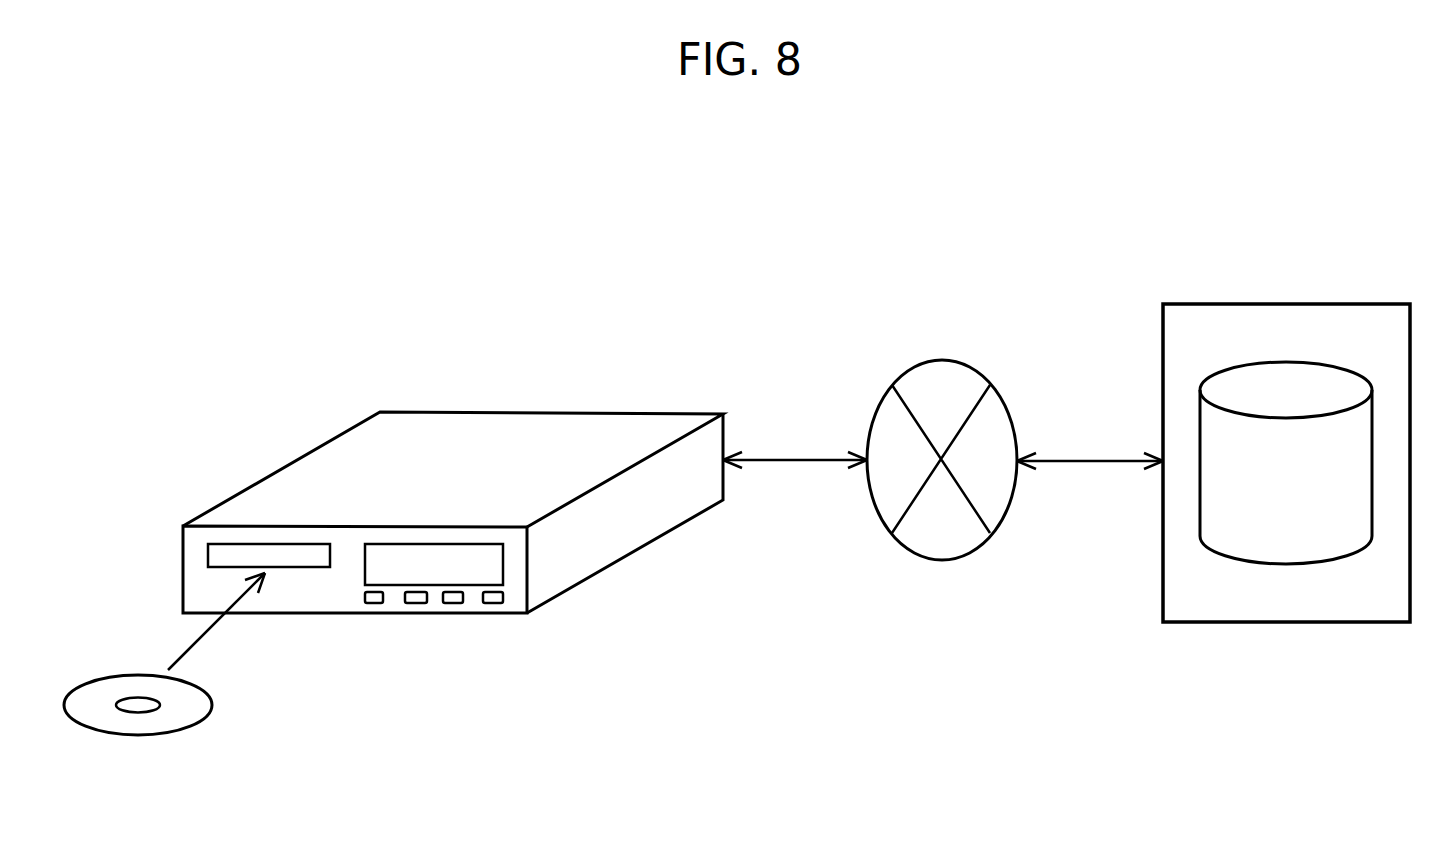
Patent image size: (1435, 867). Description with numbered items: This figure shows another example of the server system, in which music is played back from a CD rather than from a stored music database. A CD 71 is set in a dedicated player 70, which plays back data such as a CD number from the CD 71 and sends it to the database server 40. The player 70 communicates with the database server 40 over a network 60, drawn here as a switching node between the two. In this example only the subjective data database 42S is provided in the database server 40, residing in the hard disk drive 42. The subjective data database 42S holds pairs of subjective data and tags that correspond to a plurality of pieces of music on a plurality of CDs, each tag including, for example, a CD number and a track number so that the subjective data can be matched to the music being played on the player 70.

The dedicated player 70 is at (433, 613).
The CD 71 is at (135, 735).
The network 60 is at (938, 560).
The database server 40 is at (1195, 622).
The hard disk drive 42 is at (1282, 362).
The subjective data database 42S is at (1303, 553).